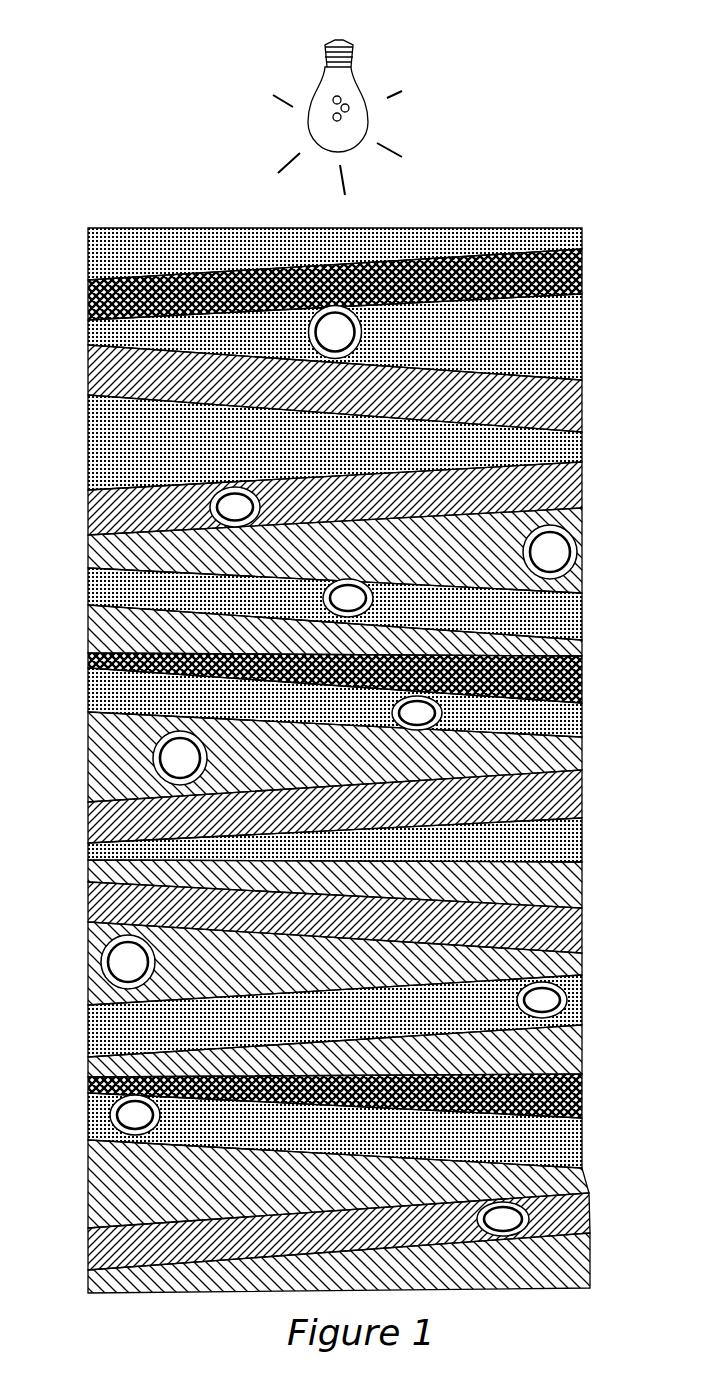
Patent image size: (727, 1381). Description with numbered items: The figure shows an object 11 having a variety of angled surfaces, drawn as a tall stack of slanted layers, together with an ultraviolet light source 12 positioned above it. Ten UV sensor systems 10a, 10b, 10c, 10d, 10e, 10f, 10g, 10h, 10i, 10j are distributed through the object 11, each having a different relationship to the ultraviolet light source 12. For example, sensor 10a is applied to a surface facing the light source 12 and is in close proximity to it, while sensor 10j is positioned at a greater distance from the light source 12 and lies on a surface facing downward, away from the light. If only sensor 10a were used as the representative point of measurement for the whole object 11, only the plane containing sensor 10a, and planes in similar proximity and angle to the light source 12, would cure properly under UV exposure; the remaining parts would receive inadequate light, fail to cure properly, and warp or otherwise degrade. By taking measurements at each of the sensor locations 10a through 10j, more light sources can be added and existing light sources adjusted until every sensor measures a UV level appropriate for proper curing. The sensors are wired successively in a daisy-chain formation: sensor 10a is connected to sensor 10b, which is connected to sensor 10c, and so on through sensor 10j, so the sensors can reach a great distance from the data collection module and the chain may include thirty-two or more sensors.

The object 11 is at (586, 221).
The ultraviolet light source 12 is at (367, 86).
The UV sensor system 10a is at (350, 330).
The UV sensor system 10b is at (227, 508).
The UV sensor system 10c is at (563, 547).
The UV sensor system 10d is at (352, 598).
The UV sensor system 10e is at (420, 713).
The UV sensor system 10f is at (163, 758).
The UV sensor system 10g is at (113, 958).
The UV sensor system 10h is at (552, 996).
The UV sensor system 10i is at (120, 1112).
The UV sensor system 10j is at (510, 1218).